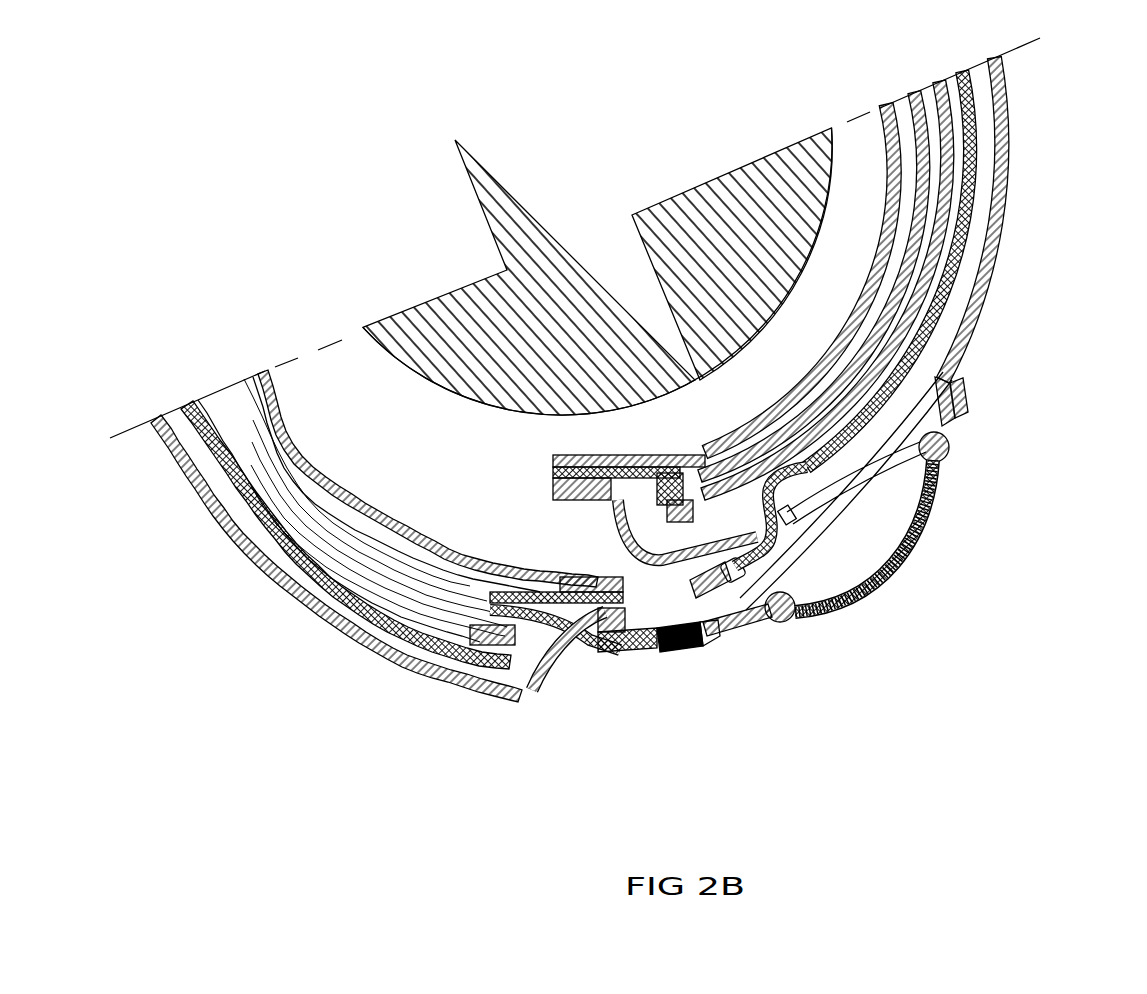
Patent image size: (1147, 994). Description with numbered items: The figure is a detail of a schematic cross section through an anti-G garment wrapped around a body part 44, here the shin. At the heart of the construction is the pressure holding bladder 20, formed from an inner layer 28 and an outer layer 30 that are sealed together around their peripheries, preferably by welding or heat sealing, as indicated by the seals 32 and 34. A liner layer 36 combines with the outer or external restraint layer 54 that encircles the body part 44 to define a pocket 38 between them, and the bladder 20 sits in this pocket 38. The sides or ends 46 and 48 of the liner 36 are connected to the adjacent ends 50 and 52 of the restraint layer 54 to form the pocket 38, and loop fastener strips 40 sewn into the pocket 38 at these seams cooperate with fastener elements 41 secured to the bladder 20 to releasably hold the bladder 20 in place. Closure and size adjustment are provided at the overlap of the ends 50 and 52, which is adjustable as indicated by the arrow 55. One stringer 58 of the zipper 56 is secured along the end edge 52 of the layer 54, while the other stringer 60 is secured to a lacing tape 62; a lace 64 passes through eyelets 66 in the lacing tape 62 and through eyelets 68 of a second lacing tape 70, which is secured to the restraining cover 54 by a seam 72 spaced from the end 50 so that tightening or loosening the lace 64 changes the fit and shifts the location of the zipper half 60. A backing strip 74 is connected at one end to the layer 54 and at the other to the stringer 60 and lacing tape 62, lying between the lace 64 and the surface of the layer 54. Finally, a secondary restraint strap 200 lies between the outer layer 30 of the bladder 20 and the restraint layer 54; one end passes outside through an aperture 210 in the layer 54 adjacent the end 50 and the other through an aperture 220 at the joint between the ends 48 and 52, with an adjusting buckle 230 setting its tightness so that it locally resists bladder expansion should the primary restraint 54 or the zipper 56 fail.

The pressure holding bladder 20 is at (348, 572).
The inner layer 28 is at (868, 322).
The outer layer 30 is at (922, 262).
The seal 32 is at (458, 642).
The seal 34 is at (672, 462).
The liner layer 36 is at (203, 483).
The pocket 38 is at (283, 418).
The loop fastener strips 40 is at (540, 593).
The cooperating fastener elements 41 is at (393, 652).
The body part 44 is at (733, 225).
The end of liner 46 is at (583, 460).
The end of liner 48 is at (603, 587).
The end of restraint layer 50 is at (582, 495).
The end of restraint layer 52 is at (614, 628).
The outer restraint layer 54 is at (997, 120).
The arrow 55 is at (402, 456).
The zipper 56 is at (683, 658).
The chain extension or stringer 58 is at (606, 645).
The chain extension or stringer 60 is at (745, 632).
The lacing tape 62 is at (760, 632).
The lace 64 is at (928, 507).
The eyelets 66 is at (795, 622).
The eyelets 68 is at (949, 452).
The lacing tape 70 is at (942, 415).
The seal or seam 72 is at (933, 383).
The backing strip 74 is at (857, 502).
The secondary restraint strap 200 is at (963, 205).
The aperture 210 is at (788, 517).
The aperture 220 is at (613, 591).
The adjusting buckle 230 is at (708, 590).